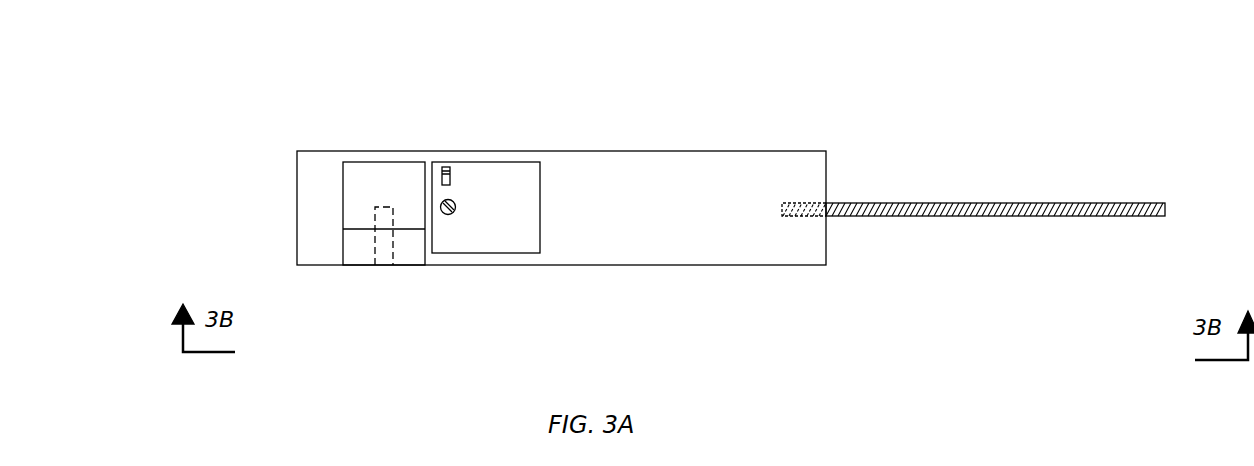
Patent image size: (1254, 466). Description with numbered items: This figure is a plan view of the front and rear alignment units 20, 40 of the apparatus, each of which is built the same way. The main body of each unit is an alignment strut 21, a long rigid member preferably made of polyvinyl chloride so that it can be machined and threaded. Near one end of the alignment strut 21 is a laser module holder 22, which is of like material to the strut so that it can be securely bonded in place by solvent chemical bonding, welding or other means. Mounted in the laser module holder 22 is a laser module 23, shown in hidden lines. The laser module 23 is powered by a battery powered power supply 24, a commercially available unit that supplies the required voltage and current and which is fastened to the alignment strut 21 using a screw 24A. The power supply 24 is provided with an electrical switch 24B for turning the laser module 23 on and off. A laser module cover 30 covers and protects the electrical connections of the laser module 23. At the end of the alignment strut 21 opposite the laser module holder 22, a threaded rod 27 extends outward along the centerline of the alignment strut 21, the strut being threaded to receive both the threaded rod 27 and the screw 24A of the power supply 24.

The front alignment unit 20 is at (474, 144).
The rear alignment unit 40 is at (561, 187).
The alignment strut 21 is at (655, 151).
The laser module holder 22 is at (408, 265).
The laser module 23 is at (380, 265).
The power supply 24 is at (492, 162).
The screw 24A is at (447, 215).
The electrical switch 24B is at (443, 167).
The threaded rod 27 is at (948, 203).
The laser module cover 30 is at (372, 162).